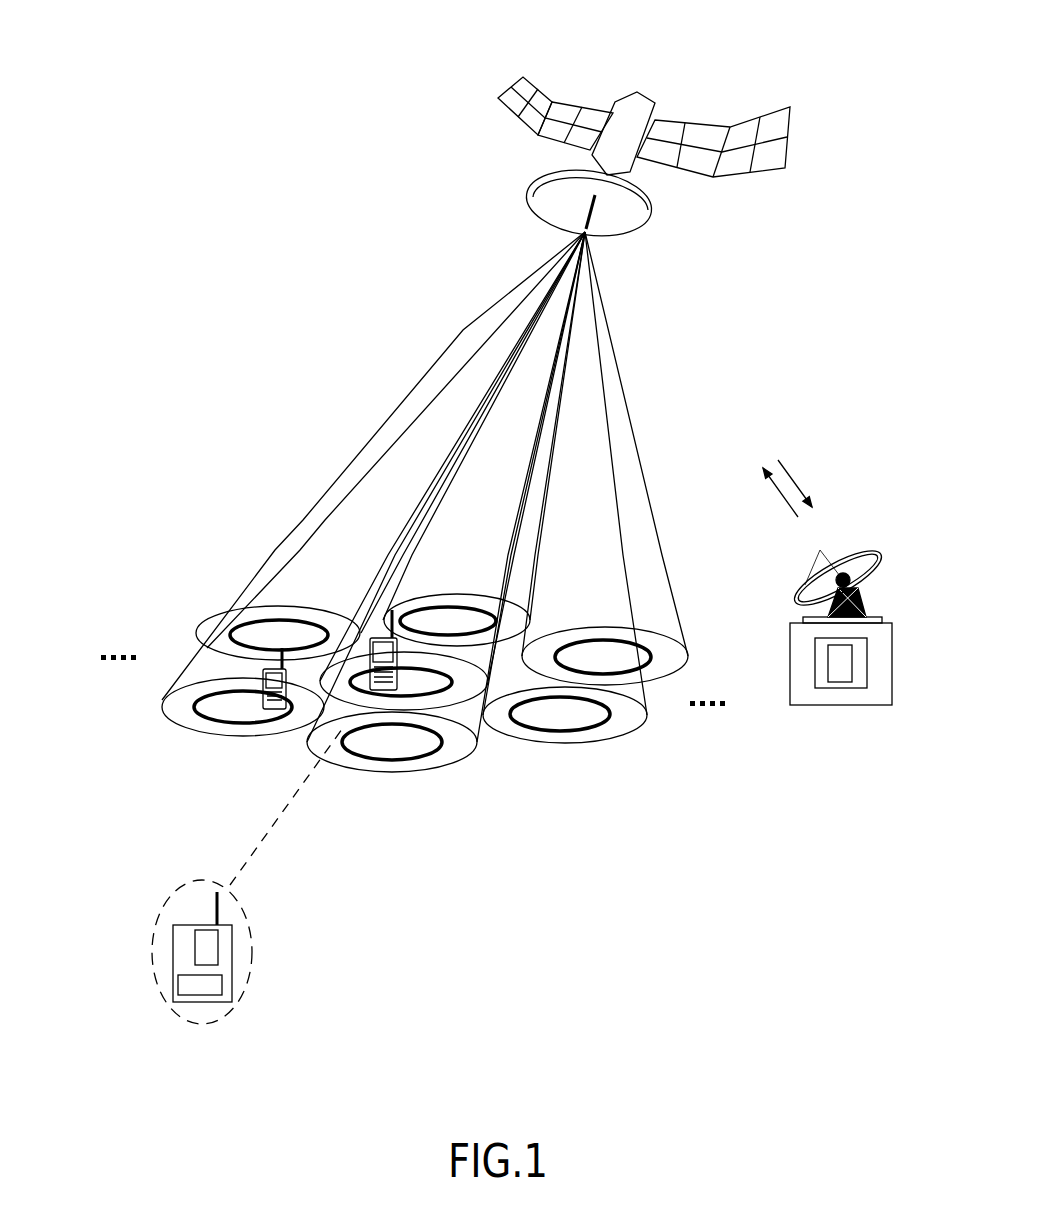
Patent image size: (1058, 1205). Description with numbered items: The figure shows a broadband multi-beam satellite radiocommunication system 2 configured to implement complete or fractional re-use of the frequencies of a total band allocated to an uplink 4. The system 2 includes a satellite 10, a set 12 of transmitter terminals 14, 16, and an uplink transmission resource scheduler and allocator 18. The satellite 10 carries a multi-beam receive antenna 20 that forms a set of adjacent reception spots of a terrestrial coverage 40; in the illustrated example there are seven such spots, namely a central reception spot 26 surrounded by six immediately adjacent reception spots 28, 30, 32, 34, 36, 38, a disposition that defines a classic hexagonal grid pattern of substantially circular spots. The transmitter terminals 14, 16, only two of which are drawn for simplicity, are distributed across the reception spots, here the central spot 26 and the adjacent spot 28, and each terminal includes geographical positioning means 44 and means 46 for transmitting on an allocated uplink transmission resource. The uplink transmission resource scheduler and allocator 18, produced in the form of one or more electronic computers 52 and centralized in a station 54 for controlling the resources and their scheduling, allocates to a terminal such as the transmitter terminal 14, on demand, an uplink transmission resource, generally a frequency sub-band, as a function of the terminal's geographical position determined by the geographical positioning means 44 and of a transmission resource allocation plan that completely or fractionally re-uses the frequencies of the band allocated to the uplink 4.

The broadband multi-beam satellite radiocommunication system 2 is at (223, 80).
The uplink 4 is at (398, 348).
The satellite 10 is at (653, 93).
The set of transmitter terminals 12 is at (236, 745).
The transmitter terminal 14 is at (415, 690).
The transmitter terminal 16 is at (275, 706).
The uplink transmission resource scheduler and allocator 18 is at (843, 670).
The multi-beam receive antenna 20 is at (653, 223).
The central reception spot 26 is at (457, 703).
The reception spot 28 is at (177, 715).
The reception spot 30 is at (312, 620).
The reception spot 32 is at (477, 607).
The reception spot 34 is at (613, 630).
The reception spot 36 is at (622, 738).
The reception spot 38 is at (403, 773).
The terrestrial coverage 40 is at (138, 605).
The geographical positioning means 44 is at (207, 987).
The means for transmitting an allocated uplink transmission resource 46 is at (218, 952).
The electronic computer 52 is at (823, 653).
The station for controlling the resources and their scheduling 54 is at (870, 537).